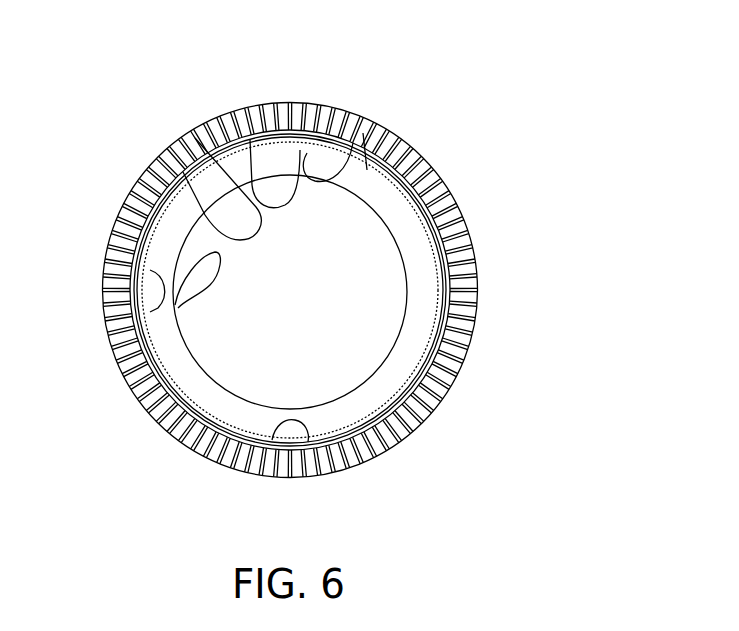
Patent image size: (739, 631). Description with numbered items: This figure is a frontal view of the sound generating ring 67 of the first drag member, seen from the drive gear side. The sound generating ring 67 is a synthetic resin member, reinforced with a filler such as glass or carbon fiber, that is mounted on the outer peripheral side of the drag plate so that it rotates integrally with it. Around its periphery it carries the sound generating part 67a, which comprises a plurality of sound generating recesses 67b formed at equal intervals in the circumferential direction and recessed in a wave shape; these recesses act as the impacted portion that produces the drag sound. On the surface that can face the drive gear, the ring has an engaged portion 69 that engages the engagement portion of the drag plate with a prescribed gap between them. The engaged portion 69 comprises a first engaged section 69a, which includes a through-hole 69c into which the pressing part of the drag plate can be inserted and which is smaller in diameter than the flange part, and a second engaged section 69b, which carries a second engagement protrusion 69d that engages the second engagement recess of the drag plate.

The sound generating ring 67 is at (442, 158).
The sound generating part 67a is at (482, 302).
The sound generating recesses 67b is at (455, 230).
The engaged portion 69 is at (142, 22).
The first engaged section 69a is at (193, 135).
The second engaged section 69b is at (252, 138).
The through-hole 69c is at (155, 200).
The second engagement protrusion 69d is at (352, 118).